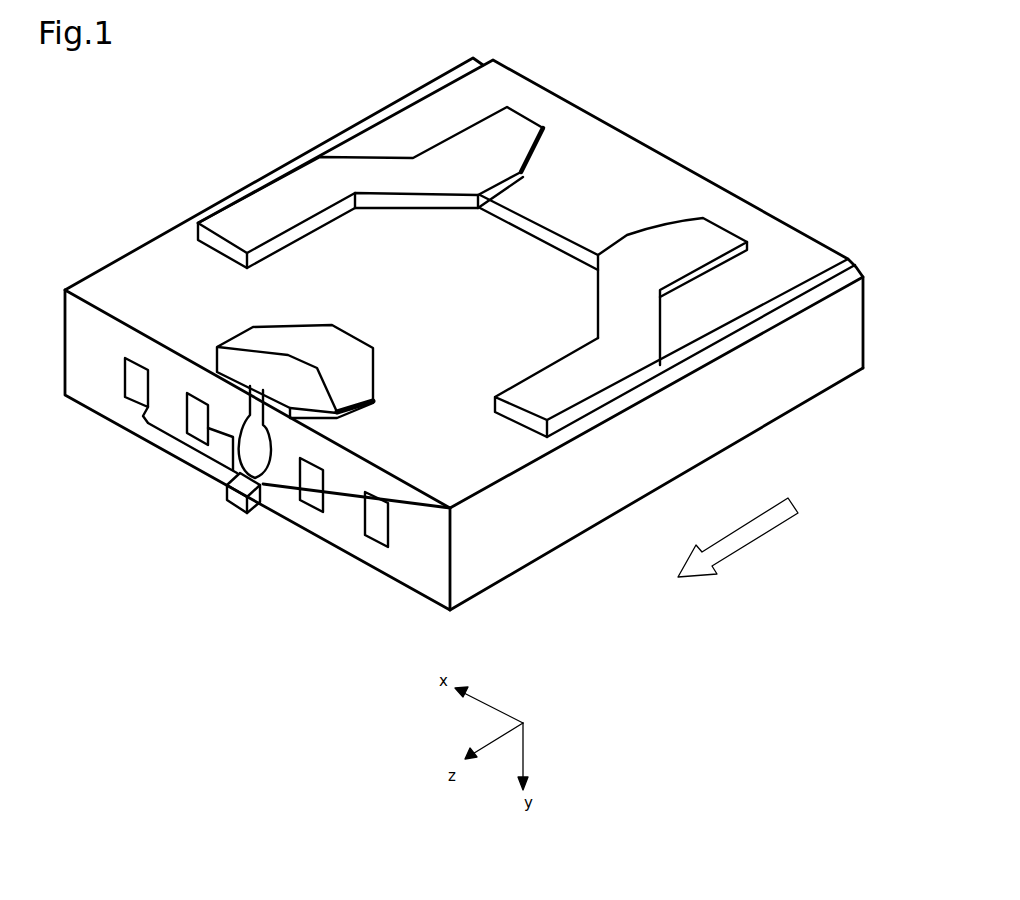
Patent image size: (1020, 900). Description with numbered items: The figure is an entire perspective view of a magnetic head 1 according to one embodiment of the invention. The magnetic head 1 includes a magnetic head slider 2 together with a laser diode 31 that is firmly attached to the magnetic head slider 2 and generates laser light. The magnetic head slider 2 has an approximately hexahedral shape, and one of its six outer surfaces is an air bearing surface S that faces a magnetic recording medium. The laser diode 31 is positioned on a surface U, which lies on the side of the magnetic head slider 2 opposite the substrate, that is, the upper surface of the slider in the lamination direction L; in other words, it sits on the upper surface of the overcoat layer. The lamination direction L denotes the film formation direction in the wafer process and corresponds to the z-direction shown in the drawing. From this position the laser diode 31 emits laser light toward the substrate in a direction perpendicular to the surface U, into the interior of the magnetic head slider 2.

The magnetic head 1 is at (464, 311).
The magnetic head slider 2 is at (181, 260).
The laser diode 31 is at (247, 513).
The air bearing surface S is at (483, 460).
The surface U is at (433, 565).
The lamination direction L is at (738, 537).